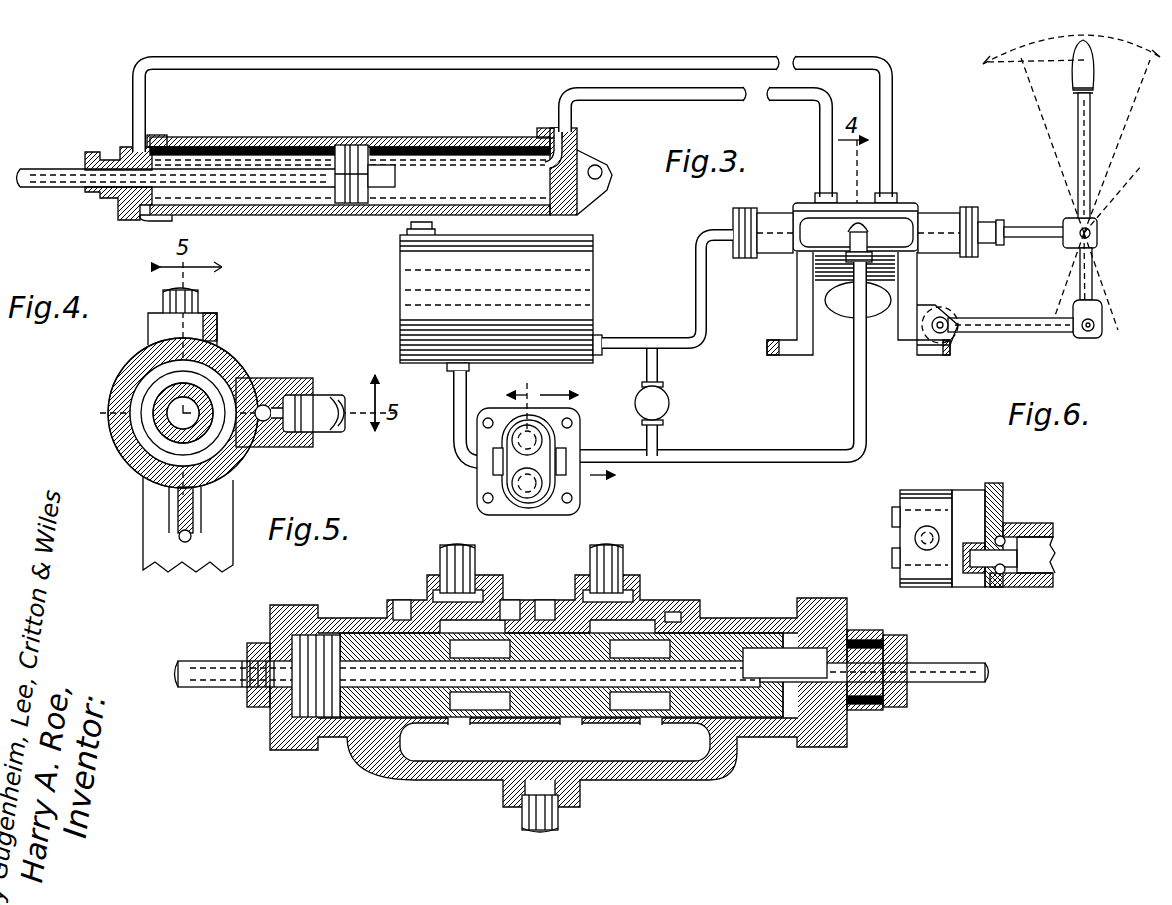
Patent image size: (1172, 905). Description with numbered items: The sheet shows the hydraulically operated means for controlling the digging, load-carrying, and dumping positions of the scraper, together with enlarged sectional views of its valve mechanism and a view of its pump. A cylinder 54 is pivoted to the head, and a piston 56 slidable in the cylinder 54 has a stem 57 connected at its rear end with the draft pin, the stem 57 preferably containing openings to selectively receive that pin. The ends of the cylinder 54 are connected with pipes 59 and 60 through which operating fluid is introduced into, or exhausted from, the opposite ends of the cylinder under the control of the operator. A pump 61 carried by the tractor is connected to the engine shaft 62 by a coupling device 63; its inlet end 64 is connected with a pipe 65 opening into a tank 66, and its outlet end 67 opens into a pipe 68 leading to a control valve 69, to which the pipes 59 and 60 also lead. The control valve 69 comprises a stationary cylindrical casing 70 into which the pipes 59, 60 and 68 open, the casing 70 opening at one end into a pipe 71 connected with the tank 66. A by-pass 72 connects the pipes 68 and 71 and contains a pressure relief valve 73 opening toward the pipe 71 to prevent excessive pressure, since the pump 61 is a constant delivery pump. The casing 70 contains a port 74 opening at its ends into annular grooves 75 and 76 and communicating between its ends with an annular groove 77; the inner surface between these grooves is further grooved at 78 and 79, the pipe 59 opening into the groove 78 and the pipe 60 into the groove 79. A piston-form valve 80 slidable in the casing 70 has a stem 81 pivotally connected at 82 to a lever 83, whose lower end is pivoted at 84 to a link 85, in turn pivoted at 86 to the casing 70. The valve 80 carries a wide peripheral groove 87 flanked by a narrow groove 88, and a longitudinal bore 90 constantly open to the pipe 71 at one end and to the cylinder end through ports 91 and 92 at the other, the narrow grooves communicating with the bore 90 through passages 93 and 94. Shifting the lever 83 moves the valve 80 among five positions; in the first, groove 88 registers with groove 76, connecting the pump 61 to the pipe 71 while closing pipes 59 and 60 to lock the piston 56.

In FIG. 3, the cylinder 54 is at (288, 140).
In FIG. 3, the piston 56 is at (370, 143).
In FIG. 3, the stem 57 is at (44, 172).
In FIG. 3, the pipe 59 is at (560, 128).
In FIG. 5, the pipe 59 is at (456, 548).
In FIG. 3, the pipe 60 is at (148, 140).
In FIG. 4, the pipe 60 is at (197, 302).
In FIG. 5, the pipe 60 is at (612, 548).
In FIG. 3, the pump 61 is at (545, 470).
In FIG. 6, the pump 61 is at (898, 538).
In FIG. 6, the engine shaft 62 is at (1040, 523).
In FIG. 6, the coupling device 63 is at (972, 540).
In FIG. 3, the inlet end 64 is at (492, 468).
In FIG. 3, the pipe 65 is at (455, 410).
In FIG. 3, the tank 66 is at (400, 292).
In FIG. 3, the outlet end 67 is at (567, 455).
In FIG. 3, the pipe 68 is at (832, 430).
In FIG. 4, the pipe 68 is at (325, 396).
In FIG. 5, the pipe 68 is at (522, 818).
In FIG. 6, the pipe 68 is at (927, 525).
In FIG. 3, the control valve 69 is at (905, 205).
In FIG. 4, the control valve 69 is at (128, 468).
In FIG. 5, the control valve 69 is at (385, 765).
In FIG. 3, the valve casing 70 is at (772, 258).
In FIG. 5, the valve casing 70 is at (322, 630).
In FIG. 3, the pipe 71 is at (695, 290).
In FIG. 5, the pipe 71 is at (212, 660).
In FIG. 3, the by-pass 72 is at (648, 378).
In FIG. 3, the pressure relief valve 73 is at (670, 403).
In FIG. 4, the port 74 is at (262, 404).
In FIG. 5, the port 74 is at (605, 755).
In FIG. 5, the annular groove 75 is at (676, 612).
In FIG. 5, the annular groove 76 is at (400, 612).
In FIG. 4, the annular groove 77 is at (145, 395).
In FIG. 5, the annular groove 77 is at (545, 600).
In FIG. 5, the groove 78 is at (440, 625).
In FIG. 5, the groove 79 is at (648, 600).
In FIG. 5, the valve 80 is at (712, 722).
In FIG. 3, the stem 81 is at (1020, 240).
In FIG. 5, the stem 81 is at (950, 684).
In FIG. 3, the pivotal connection 82 is at (1091, 233).
In FIG. 3, the lever 83 is at (1092, 290).
In FIG. 3, the pivot 84 is at (1095, 336).
In FIG. 3, the link 85 is at (1020, 332).
In FIG. 3, the pivot 86 is at (945, 318).
In FIG. 4, the peripheral groove 87 is at (158, 432).
In FIG. 5, the peripheral groove 87 is at (510, 600).
In FIG. 5, the groove 88 is at (561, 675).
In FIG. 4, the bore 90 is at (170, 413).
In FIG. 5, the bore 90 is at (372, 690).
In FIG. 5, the port 91 is at (760, 640).
In FIG. 5, the port 92 is at (745, 725).
In FIG. 5, the passage 93 is at (460, 700).
In FIG. 5, the passage 94 is at (630, 700).